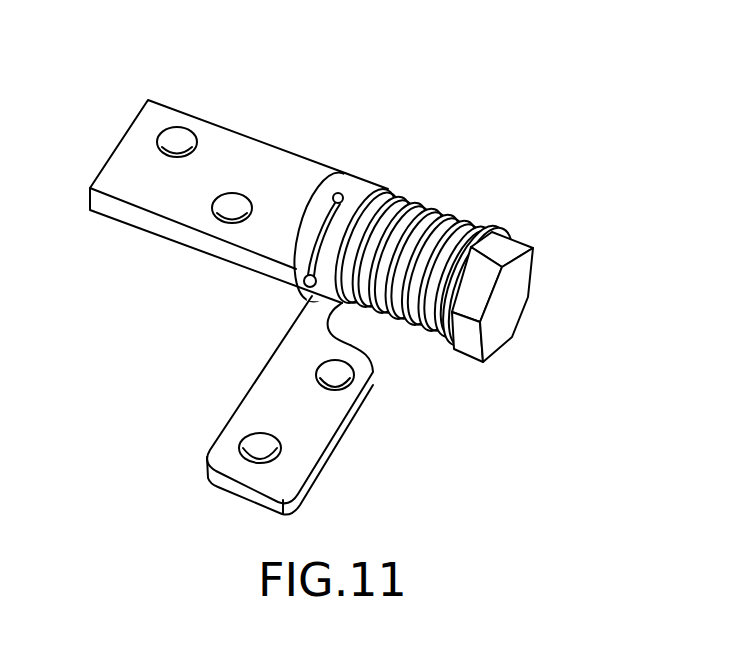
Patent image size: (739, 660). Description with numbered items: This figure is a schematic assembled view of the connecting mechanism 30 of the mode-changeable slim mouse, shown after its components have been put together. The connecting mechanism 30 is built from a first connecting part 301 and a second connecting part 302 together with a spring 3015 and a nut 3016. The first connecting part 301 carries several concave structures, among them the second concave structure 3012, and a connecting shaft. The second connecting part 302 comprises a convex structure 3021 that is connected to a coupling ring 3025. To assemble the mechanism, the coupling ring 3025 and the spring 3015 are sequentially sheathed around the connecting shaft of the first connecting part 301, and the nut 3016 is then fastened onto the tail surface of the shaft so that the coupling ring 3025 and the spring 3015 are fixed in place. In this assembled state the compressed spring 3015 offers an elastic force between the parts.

The connecting mechanism 30 is at (440, 92).
The first connecting part 301 is at (134, 165).
The second connecting part 302 is at (275, 400).
The second concave structure 3012 is at (303, 272).
The spring 3015 is at (438, 238).
The nut 3016 is at (514, 297).
The convex structure 3021 is at (338, 194).
The coupling ring 3025 is at (372, 193).